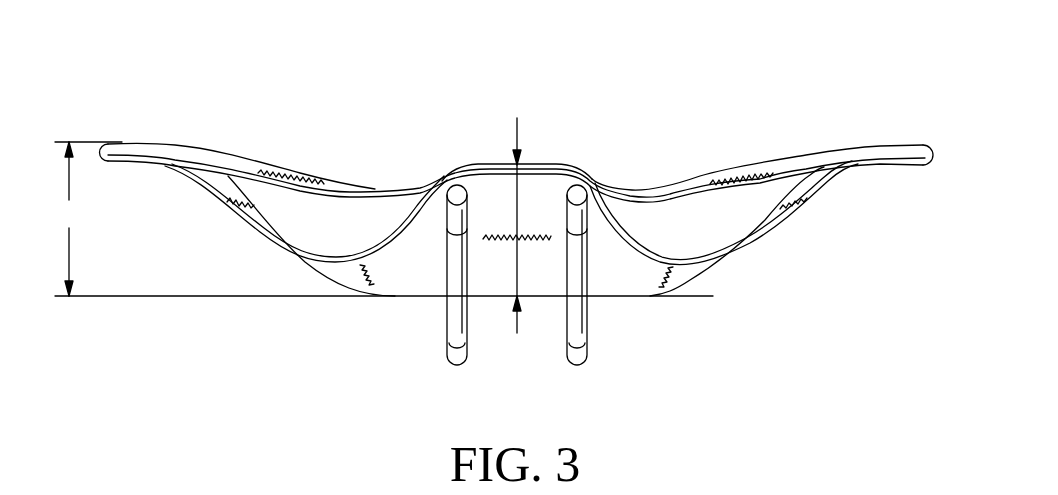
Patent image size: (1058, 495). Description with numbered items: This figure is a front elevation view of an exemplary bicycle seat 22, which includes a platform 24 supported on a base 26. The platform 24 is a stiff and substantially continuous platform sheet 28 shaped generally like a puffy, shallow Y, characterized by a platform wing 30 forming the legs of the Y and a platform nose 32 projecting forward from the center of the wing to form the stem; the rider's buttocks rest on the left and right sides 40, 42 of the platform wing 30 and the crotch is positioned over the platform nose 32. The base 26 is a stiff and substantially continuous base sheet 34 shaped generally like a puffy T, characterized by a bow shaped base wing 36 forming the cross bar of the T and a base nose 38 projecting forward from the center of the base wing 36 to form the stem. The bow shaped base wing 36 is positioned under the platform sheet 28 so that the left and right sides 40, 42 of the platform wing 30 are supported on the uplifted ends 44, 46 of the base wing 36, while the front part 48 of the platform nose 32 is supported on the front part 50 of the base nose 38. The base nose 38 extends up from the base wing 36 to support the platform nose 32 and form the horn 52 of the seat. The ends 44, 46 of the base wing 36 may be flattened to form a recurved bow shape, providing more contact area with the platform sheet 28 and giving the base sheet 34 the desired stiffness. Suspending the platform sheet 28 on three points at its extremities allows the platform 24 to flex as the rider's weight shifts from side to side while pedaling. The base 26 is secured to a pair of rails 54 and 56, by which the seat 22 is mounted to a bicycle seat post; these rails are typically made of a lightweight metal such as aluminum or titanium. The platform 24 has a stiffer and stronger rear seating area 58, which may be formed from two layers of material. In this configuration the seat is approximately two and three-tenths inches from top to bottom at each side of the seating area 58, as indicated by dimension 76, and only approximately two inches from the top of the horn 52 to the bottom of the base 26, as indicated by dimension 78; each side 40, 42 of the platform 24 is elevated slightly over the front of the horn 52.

The seat 22 is at (736, 88).
The platform 24 is at (242, 157).
The base 26 is at (415, 291).
The platform sheet 28 is at (349, 194).
The platform wing 30 is at (841, 147).
The platform nose 32 is at (493, 163).
The base sheet 34 is at (236, 220).
The base wing 36 is at (767, 224).
The base nose 38 is at (493, 181).
The left side of platform wing 40 is at (925, 144).
The right side of platform wing 42 is at (106, 143).
The end of base wing 44 is at (922, 167).
The end of base wing 46 is at (110, 164).
The front part of platform nose 48 is at (548, 168).
The front part of base nose 50 is at (551, 180).
The horn 52 is at (463, 160).
The rail 54 is at (450, 347).
The rail 56 is at (588, 342).
The seating area 58 is at (300, 176).
The dimension 76 is at (88, 219).
The dimension 78 is at (517, 242).